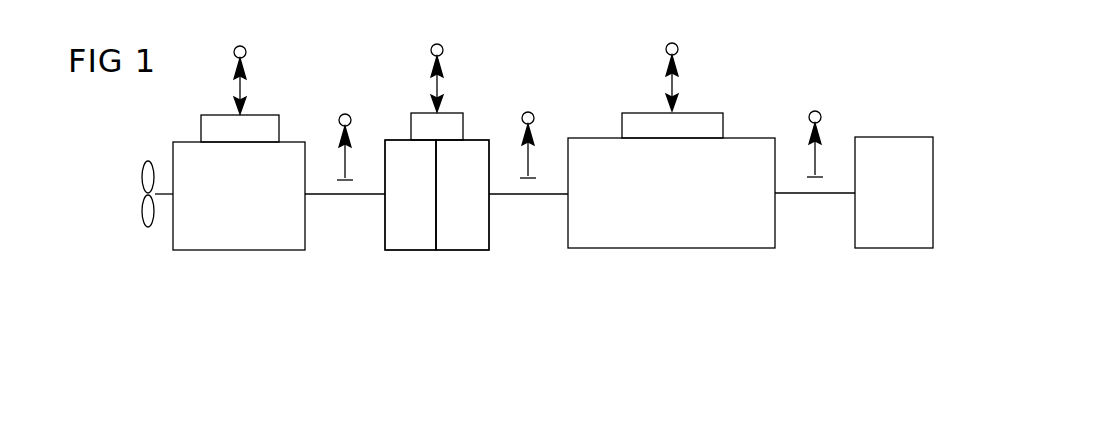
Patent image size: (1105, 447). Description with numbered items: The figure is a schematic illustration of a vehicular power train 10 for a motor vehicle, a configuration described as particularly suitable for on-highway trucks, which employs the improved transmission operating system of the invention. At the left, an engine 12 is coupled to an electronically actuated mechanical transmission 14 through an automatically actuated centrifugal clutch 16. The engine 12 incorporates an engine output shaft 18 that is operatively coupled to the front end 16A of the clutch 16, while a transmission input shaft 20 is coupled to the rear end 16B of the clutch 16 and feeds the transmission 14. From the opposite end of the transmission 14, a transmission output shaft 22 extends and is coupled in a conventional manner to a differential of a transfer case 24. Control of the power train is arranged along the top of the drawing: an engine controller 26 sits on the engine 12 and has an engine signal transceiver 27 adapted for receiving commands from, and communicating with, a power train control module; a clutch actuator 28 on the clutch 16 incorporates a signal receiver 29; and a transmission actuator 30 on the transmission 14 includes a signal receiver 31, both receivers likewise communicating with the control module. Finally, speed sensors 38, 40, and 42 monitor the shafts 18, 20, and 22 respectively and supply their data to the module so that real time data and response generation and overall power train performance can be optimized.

The vehicular power train 10 is at (830, 32).
The engine 12 is at (232, 236).
The electronically actuated mechanical transmission 14 is at (663, 228).
The automatically actuated centrifugal clutch 16 is at (428, 277).
The front end of the clutch 16A is at (407, 233).
The rear end of the clutch 16B is at (455, 236).
The engine output shaft 18 is at (343, 197).
The transmission input shaft 20 is at (538, 197).
The transmission output shaft 22 is at (825, 196).
The transfer case 24 is at (915, 188).
The engine controller 26 is at (210, 128).
The engine signal transceiver 27 is at (244, 82).
The clutch actuator 28 is at (452, 126).
The signal receiver 29 is at (440, 83).
The transmission actuator 30 is at (640, 120).
The signal receiver 31 is at (673, 84).
The speed sensor 38 is at (347, 162).
The speed sensor 40 is at (530, 160).
The speed sensor 42 is at (817, 162).